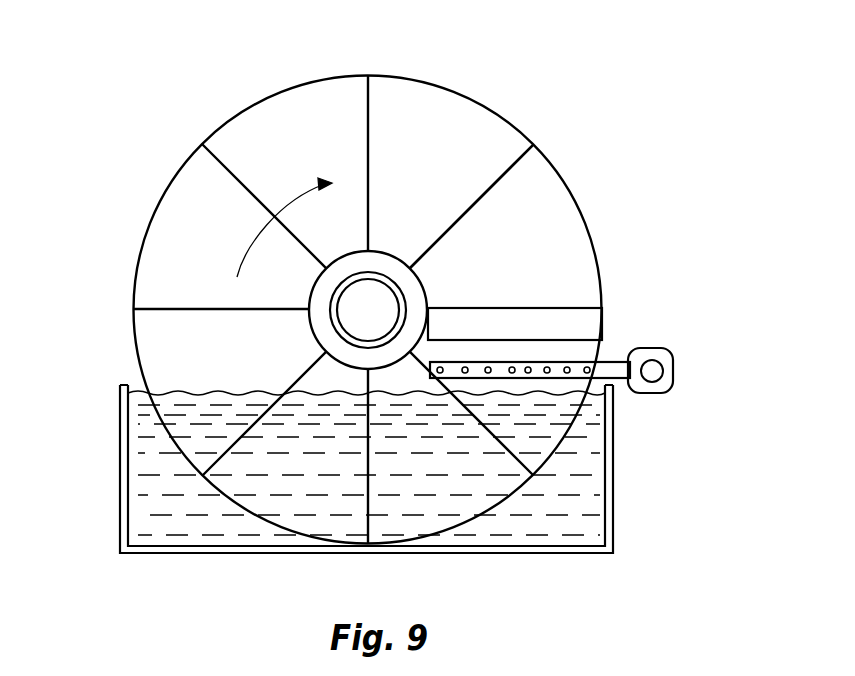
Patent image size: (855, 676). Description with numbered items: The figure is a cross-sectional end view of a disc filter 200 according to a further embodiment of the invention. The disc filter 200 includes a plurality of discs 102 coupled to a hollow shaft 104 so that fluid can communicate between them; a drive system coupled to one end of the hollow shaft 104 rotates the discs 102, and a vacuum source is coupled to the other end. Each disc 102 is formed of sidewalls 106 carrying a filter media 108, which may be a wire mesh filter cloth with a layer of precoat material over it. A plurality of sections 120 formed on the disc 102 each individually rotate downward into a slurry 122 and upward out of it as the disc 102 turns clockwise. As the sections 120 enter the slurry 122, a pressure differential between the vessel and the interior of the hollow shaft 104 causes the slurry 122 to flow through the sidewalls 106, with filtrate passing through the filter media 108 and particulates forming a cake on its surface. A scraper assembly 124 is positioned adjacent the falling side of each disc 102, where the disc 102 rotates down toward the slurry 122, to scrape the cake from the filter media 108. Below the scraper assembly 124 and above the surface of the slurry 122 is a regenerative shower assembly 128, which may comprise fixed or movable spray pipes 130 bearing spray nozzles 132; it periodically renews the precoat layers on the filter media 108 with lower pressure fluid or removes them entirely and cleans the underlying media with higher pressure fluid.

The disc 102 is at (131, 294).
The hollow shaft 104 is at (330, 327).
The sidewall 106 is at (502, 240).
The filter media 108 is at (472, 207).
The section 120 is at (410, 130).
The slurry 122 is at (573, 470).
The scraper assembly 124 is at (585, 327).
The regenerative shower assembly 128 is at (665, 378).
The spray pipe 130 is at (610, 370).
The spray nozzle 132 is at (552, 363).
The disc filter 200 is at (652, 117).